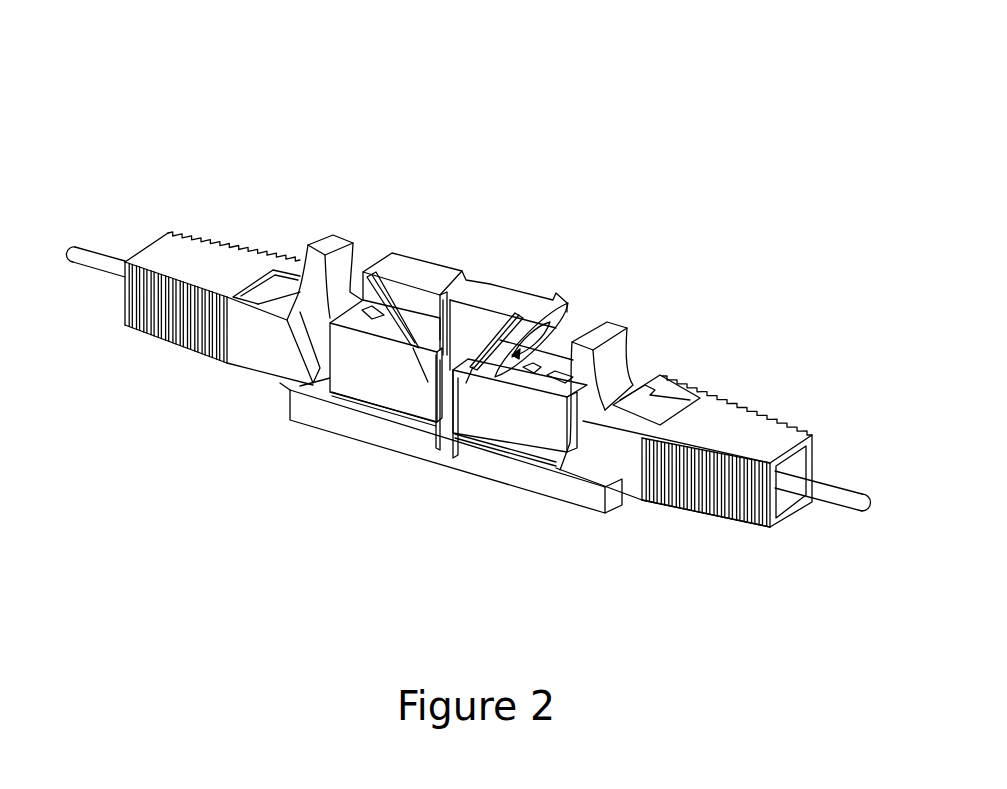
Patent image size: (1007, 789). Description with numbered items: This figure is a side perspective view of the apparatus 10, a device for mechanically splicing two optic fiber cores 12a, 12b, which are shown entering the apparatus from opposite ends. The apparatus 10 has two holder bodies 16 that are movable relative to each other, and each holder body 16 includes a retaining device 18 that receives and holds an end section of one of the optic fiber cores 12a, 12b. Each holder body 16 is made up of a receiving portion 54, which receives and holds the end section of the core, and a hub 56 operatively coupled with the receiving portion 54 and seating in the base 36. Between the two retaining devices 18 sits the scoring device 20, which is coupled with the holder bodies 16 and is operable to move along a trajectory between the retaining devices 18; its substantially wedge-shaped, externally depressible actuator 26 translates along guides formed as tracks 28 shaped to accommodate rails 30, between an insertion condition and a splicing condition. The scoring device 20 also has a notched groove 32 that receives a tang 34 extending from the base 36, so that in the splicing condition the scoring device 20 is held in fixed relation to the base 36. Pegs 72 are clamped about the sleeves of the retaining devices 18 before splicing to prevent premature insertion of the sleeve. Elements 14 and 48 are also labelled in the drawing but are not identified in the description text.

The apparatus 10 is at (697, 353).
The optic fiber core 12a is at (847, 503).
The optic fiber core 12b is at (94, 250).
The base / main body 14 is at (487, 452).
The holder body 16 is at (207, 360).
The retaining device 18 is at (257, 268).
The scoring device 20 is at (410, 263).
The actuator 26 is at (490, 283).
The track 28 is at (462, 438).
The rail 30 is at (548, 322).
The notched groove 32 is at (443, 292).
The tang 34 is at (442, 383).
The base 36 is at (377, 446).
The actuation flap 48 is at (368, 270).
The receiving portion 54 is at (290, 262).
The hub 56 is at (345, 372).
The peg 72 is at (322, 235).